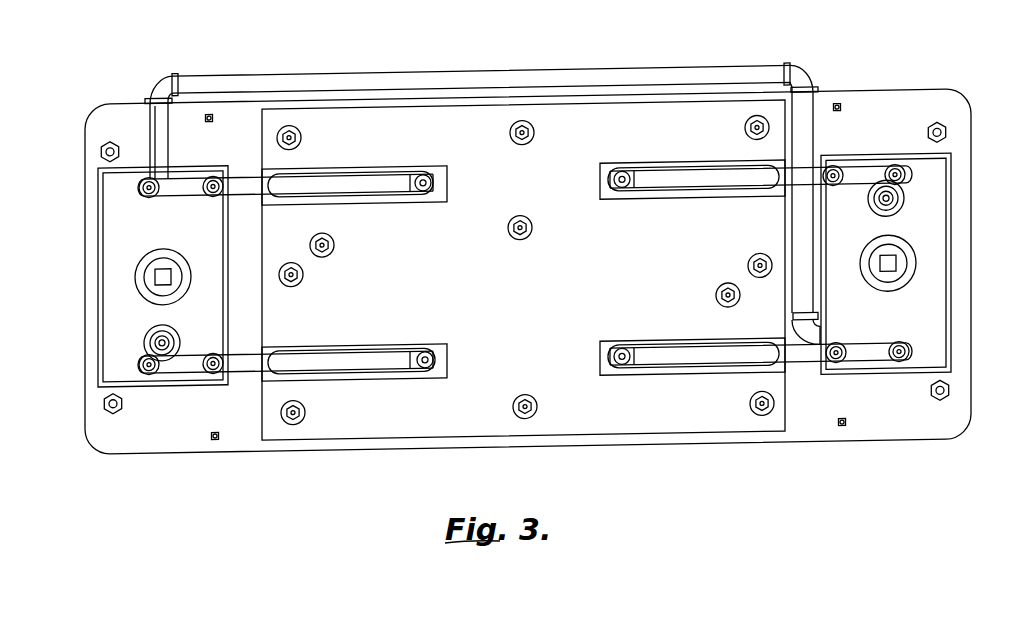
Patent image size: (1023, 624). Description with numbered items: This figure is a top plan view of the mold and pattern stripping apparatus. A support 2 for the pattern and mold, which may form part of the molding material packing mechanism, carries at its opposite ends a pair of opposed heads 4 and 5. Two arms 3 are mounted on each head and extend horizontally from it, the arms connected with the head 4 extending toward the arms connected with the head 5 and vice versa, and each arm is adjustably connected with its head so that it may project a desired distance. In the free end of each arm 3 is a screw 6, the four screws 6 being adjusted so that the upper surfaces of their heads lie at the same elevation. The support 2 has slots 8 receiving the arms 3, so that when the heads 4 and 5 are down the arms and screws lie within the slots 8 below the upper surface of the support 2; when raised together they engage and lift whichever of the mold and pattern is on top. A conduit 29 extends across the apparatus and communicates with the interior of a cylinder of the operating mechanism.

The support 2 is at (412, 436).
The arms 3 is at (355, 192).
The head 4 is at (935, 244).
The head 5 is at (112, 251).
The screw 6 is at (432, 184).
The slots 8 is at (441, 171).
The conduit 29 is at (511, 70).